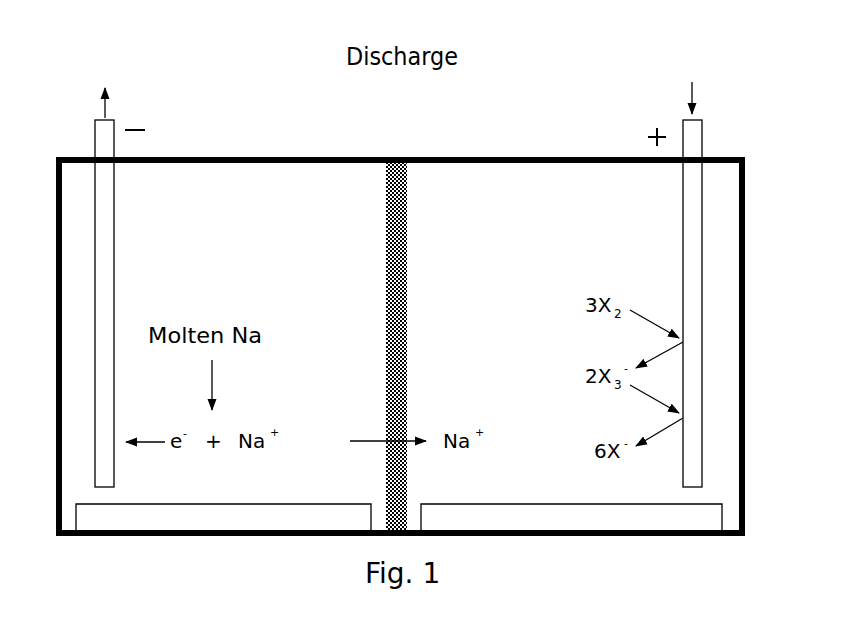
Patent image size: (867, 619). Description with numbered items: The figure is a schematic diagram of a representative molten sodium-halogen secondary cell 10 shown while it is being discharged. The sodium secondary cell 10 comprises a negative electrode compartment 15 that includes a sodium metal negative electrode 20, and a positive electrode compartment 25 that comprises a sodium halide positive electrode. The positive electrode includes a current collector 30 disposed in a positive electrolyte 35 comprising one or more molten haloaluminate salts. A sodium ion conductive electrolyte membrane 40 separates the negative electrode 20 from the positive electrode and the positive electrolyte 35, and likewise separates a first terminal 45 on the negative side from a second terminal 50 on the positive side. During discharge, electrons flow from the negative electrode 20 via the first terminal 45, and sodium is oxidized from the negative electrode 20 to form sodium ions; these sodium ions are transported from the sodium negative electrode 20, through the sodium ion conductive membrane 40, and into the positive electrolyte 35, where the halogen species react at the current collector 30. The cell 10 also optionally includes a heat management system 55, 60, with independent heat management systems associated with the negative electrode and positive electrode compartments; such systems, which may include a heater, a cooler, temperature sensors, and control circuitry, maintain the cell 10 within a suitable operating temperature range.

The sodium secondary cell 10 is at (270, 104).
The negative electrode compartment 15 is at (210, 138).
The sodium metal negative electrode 20 is at (240, 257).
The positive electrode compartment 25 is at (556, 138).
The current collector 30 is at (702, 250).
The positive electrolyte 35 is at (566, 256).
The sodium ion conductive electrolyte membrane 40 is at (383, 197).
The first terminal 45 is at (95, 143).
The second terminal 50 is at (702, 143).
The heat management system 55 is at (141, 522).
The heat management system 60 is at (661, 522).